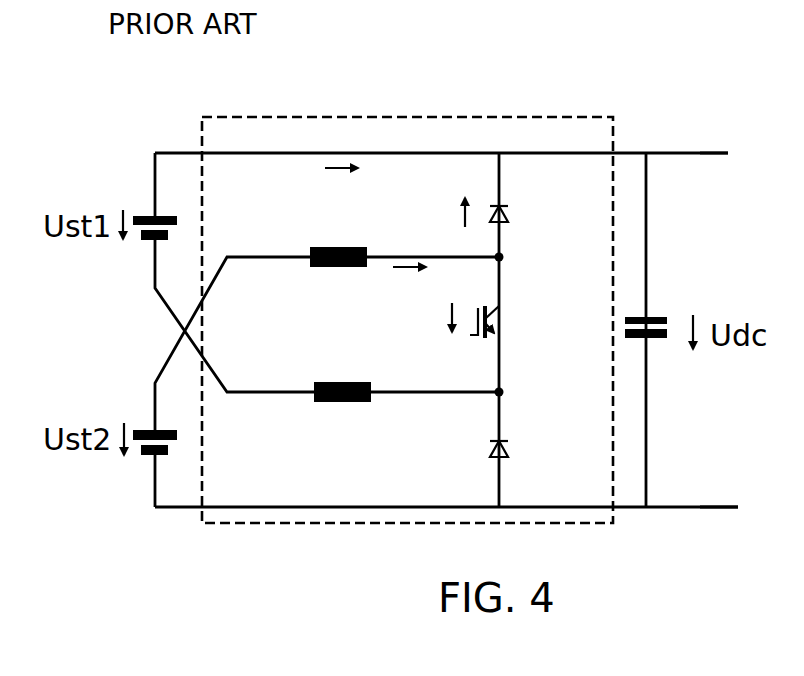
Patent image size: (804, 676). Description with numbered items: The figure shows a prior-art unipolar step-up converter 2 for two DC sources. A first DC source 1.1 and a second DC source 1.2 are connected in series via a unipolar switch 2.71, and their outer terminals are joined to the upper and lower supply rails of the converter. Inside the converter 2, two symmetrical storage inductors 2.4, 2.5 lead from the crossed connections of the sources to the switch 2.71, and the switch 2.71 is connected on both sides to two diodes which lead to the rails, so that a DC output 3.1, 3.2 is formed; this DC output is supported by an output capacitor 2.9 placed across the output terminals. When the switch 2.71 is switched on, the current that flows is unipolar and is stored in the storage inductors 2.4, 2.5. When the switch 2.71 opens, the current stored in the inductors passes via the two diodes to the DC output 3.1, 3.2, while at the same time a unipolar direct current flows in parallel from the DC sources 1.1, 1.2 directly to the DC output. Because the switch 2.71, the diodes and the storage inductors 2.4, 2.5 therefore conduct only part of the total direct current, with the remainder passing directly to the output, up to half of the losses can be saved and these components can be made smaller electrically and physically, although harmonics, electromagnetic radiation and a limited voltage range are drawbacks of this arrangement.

The converter circuit (prior art) 2 is at (245, 135).
The first DC source 1.1 is at (155, 215).
The second DC source 1.2 is at (155, 428).
The storage inductor 2.4 is at (350, 248).
The storage inductor 2.5 is at (358, 383).
The unipolar switch 2.71 is at (490, 312).
The output capacitor 2.9 is at (738, 300).
The DC output 3.1 is at (647, 155).
The DC output 3.2 is at (648, 505).